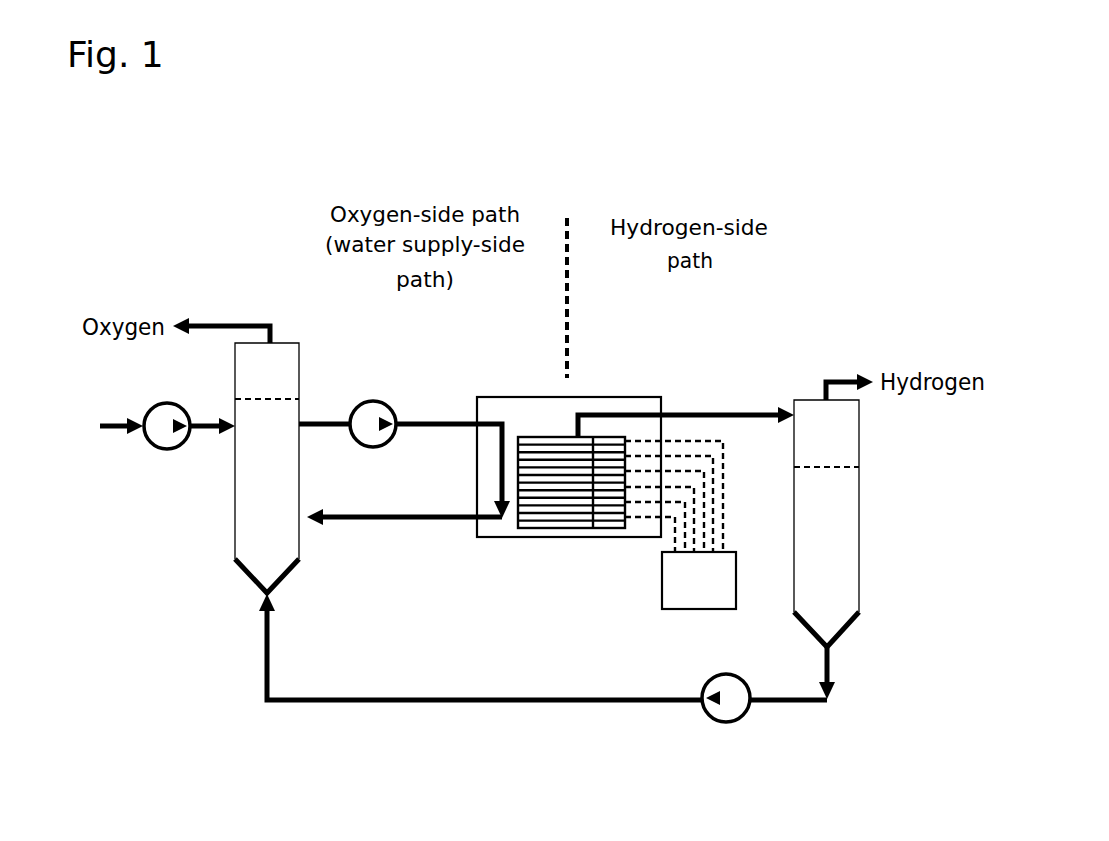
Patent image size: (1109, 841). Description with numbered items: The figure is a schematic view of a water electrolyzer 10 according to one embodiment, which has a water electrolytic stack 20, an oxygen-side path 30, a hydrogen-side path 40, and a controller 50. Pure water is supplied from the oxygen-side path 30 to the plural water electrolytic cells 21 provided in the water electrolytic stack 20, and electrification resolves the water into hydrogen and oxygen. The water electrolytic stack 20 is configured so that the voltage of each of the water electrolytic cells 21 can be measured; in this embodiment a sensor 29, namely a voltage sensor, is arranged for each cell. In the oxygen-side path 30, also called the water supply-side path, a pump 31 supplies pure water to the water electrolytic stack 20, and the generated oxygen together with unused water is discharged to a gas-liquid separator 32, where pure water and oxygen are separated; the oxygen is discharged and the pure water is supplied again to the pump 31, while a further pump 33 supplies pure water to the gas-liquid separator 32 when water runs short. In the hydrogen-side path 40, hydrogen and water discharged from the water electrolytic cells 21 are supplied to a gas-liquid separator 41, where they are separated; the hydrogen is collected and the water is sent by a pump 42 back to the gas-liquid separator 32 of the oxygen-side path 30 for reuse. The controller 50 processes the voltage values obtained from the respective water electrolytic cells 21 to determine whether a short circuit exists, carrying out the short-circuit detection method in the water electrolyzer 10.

The water electrolyzer 10 is at (180, 217).
The water electrolytic stack 20 is at (487, 370).
The water electrolytic cells 21 is at (530, 436).
The sensor (voltage sensor) 29 is at (608, 529).
The oxygen-side path (water supply-side path) 30 is at (293, 272).
The pump 31 is at (362, 401).
The gas-liquid separator 32 is at (235, 536).
The pump 33 is at (160, 405).
The hydrogen-side path 40 is at (790, 257).
The gas-liquid separator 41 is at (859, 553).
The pump 42 is at (730, 722).
The controller 50 is at (668, 610).